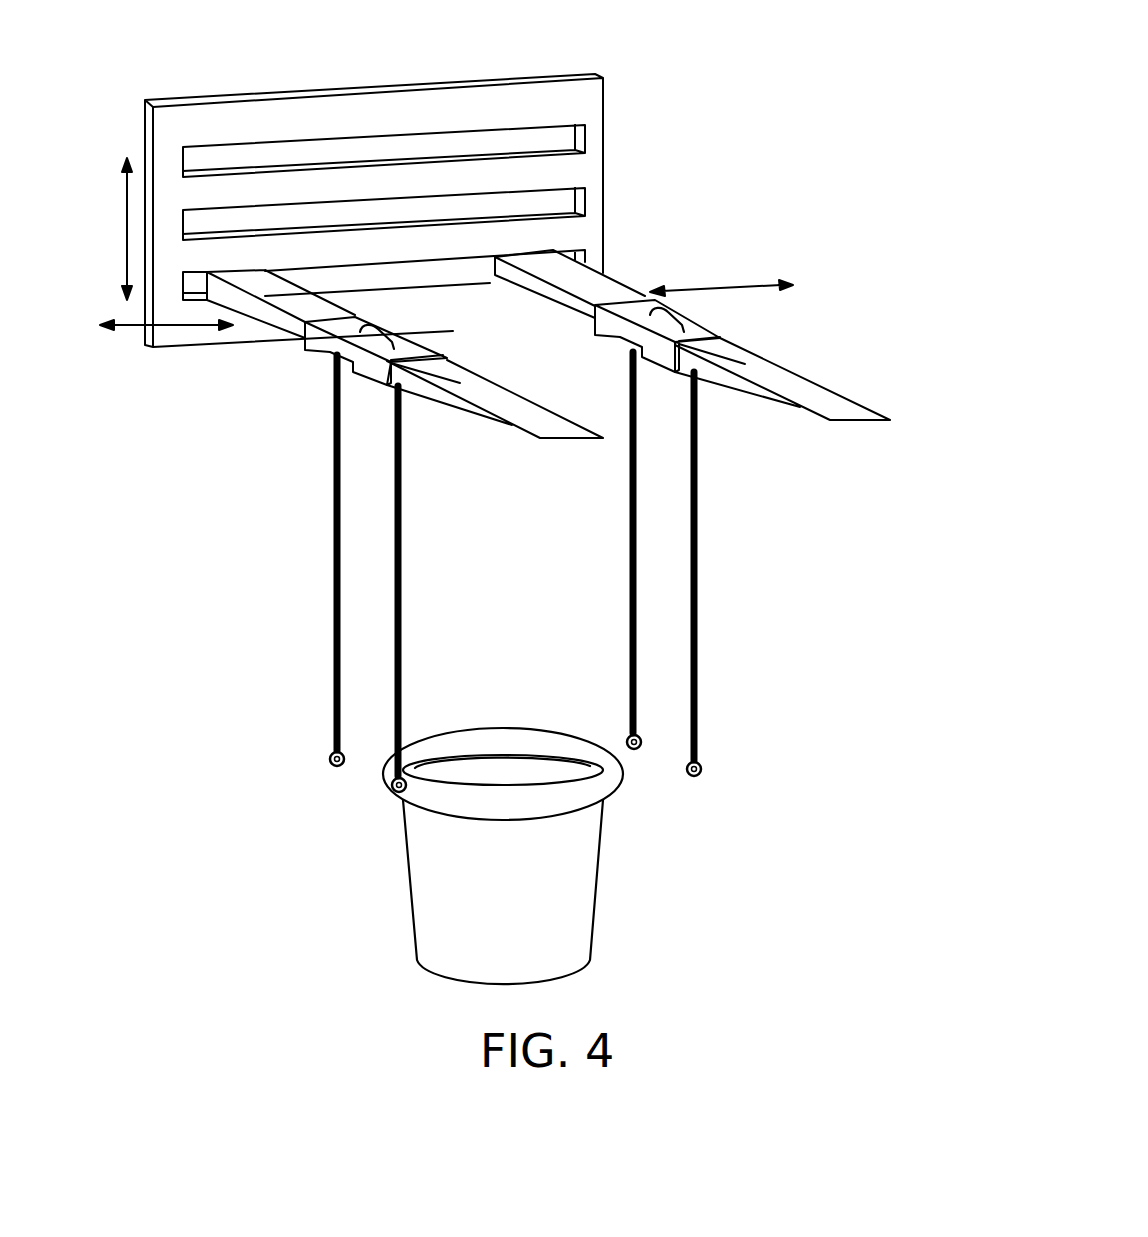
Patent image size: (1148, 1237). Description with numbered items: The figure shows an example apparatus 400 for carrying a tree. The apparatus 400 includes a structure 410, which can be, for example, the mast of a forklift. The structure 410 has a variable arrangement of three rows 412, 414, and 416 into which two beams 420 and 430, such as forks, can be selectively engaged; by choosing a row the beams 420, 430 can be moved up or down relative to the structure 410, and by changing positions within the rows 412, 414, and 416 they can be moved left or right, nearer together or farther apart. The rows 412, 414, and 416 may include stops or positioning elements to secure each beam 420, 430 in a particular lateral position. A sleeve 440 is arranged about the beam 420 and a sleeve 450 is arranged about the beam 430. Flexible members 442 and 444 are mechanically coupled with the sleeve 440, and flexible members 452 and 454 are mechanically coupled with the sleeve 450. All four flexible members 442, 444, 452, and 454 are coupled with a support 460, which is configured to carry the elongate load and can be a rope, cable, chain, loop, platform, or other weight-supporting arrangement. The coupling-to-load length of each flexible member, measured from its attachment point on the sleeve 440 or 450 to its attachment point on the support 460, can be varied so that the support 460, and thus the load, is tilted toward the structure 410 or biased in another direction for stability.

The apparatus 400 is at (306, 27).
The structure 410 is at (427, 189).
The row 412 is at (563, 139).
The row 414 is at (563, 204).
The row 416 is at (573, 262).
The beam 420 is at (405, 374).
The beam 430 is at (692, 322).
The sleeve 440 is at (311, 351).
The sleeve 450 is at (707, 333).
The flexible member 442 is at (625, 741).
The flexible member 444 is at (703, 770).
The flexible member 452 is at (330, 758).
The flexible member 454 is at (385, 782).
The support 460 is at (526, 916).